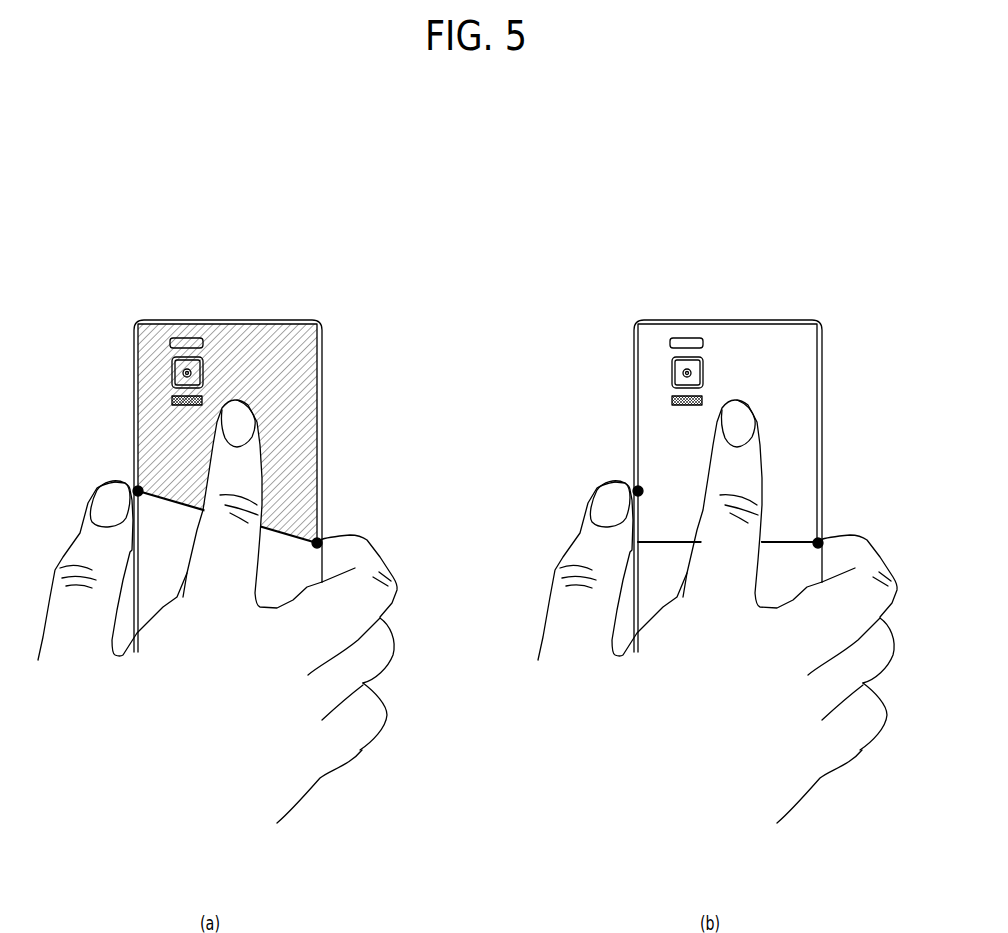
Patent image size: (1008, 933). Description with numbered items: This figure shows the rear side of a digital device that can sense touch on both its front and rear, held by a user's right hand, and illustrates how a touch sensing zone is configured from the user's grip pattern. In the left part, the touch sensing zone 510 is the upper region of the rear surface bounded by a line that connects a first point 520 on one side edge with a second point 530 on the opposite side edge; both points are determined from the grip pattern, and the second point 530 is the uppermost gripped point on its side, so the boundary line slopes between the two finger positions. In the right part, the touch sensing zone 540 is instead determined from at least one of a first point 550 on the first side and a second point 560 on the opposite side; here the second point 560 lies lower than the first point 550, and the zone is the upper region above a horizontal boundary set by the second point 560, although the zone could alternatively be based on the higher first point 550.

The touch sensing zone 510 is at (318, 383).
The first point 520 is at (133, 488).
The second point 530 is at (320, 540).
The touch sensing zone 540 is at (813, 387).
The first point 550 is at (633, 488).
The second point 560 is at (821, 540).